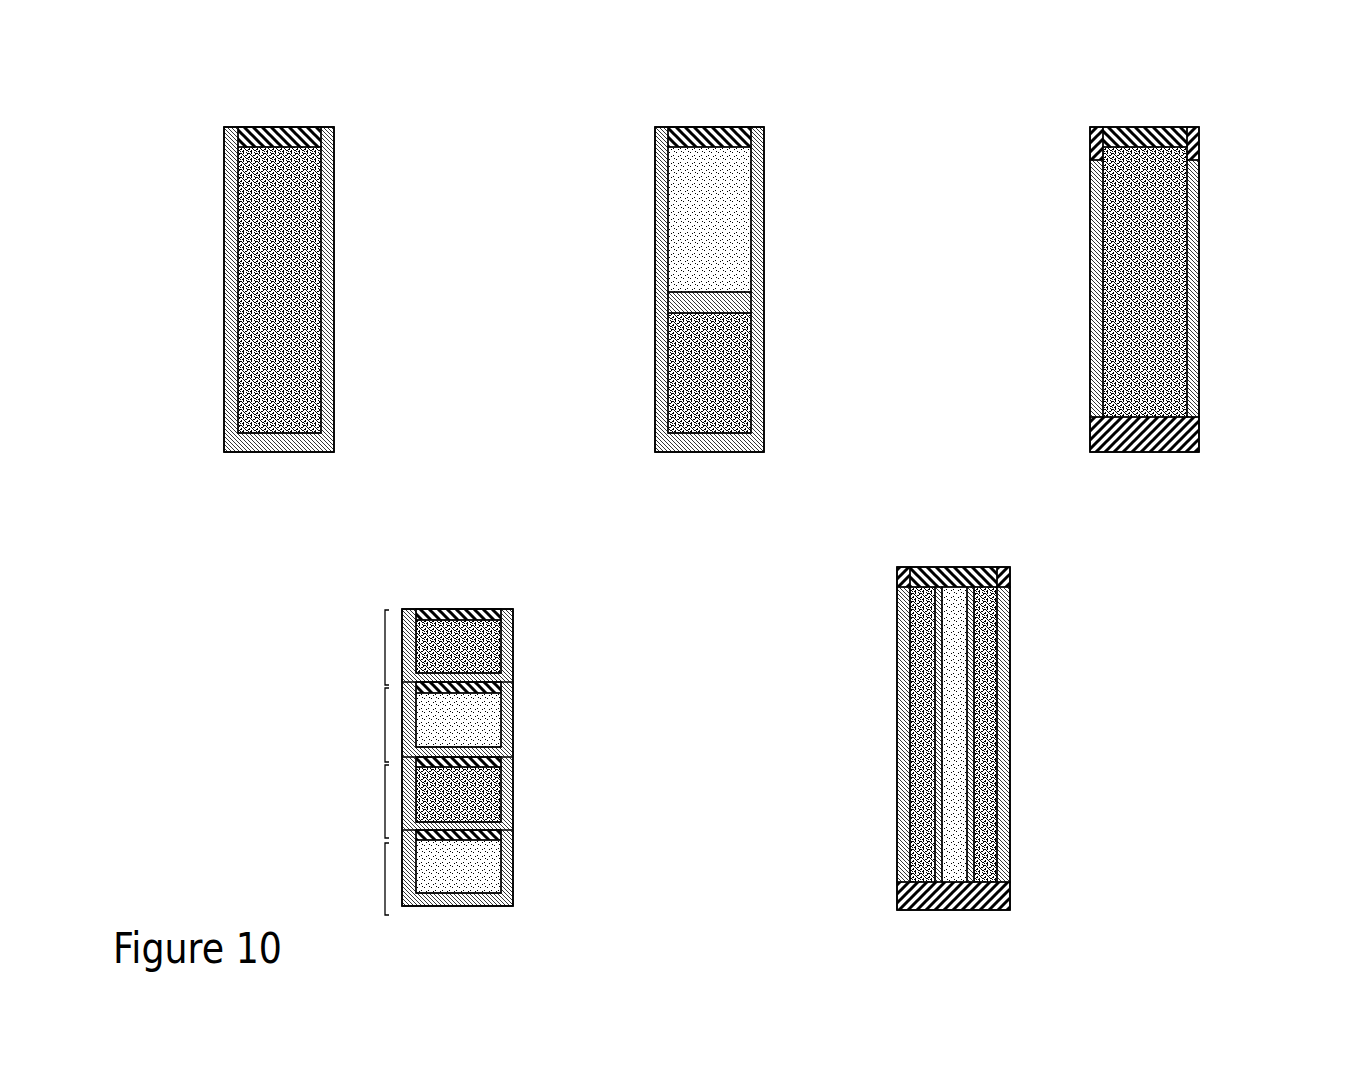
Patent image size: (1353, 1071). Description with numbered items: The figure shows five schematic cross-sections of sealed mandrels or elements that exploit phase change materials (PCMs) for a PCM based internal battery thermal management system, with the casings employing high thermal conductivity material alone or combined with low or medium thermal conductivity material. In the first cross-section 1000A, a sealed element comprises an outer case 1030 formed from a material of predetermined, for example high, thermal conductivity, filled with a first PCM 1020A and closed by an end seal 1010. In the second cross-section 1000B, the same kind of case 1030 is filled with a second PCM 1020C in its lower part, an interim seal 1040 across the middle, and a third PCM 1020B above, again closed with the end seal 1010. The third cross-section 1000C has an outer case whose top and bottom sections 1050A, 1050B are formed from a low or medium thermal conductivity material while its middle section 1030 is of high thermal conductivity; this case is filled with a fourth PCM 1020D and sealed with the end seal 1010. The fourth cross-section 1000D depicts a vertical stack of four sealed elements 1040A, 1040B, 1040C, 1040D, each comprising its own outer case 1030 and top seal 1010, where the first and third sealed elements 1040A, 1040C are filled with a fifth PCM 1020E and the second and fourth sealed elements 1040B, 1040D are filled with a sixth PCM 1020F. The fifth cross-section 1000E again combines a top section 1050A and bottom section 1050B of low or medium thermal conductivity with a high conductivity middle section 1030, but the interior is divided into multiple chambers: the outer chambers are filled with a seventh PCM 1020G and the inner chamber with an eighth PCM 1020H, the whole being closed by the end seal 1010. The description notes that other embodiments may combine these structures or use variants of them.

The first cross-section 1000A is at (201, 117).
The second cross-section 1000B is at (633, 117).
The third cross-section 1000C is at (1062, 115).
The fourth cross-section 1000D is at (341, 597).
The fifth cross-section 1000E is at (843, 597).
The end seal 1010 is at (318, 128).
The first PCM 1020A is at (312, 236).
The third PCM 1020B is at (733, 230).
The second PCM 1020C is at (745, 378).
The fourth PCM 1020D is at (1165, 228).
The fifth PCM 1020E is at (490, 640).
The sixth PCM 1020F is at (493, 721).
The seventh PCM 1020G is at (993, 657).
The eighth PCM 1020H is at (955, 785).
The outer case 1030 is at (340, 320).
The interim seal 1040 is at (730, 303).
The first sealed element 1040A is at (382, 650).
The second sealed element 1040B is at (382, 732).
The third sealed element 1040C is at (382, 802).
The fourth sealed element 1040D is at (382, 882).
The top section 1050A is at (1200, 141).
The bottom section 1050B is at (1197, 439).